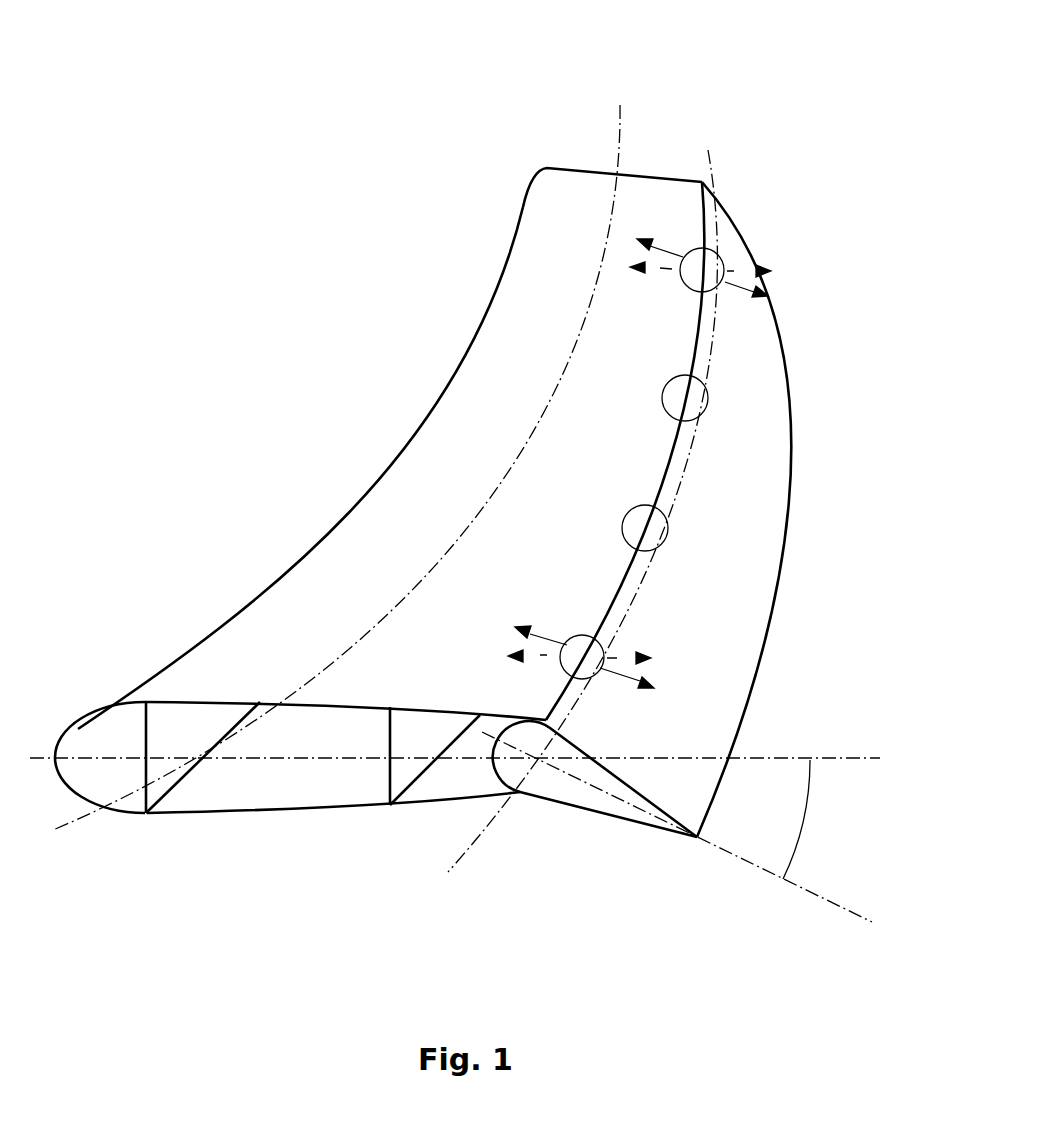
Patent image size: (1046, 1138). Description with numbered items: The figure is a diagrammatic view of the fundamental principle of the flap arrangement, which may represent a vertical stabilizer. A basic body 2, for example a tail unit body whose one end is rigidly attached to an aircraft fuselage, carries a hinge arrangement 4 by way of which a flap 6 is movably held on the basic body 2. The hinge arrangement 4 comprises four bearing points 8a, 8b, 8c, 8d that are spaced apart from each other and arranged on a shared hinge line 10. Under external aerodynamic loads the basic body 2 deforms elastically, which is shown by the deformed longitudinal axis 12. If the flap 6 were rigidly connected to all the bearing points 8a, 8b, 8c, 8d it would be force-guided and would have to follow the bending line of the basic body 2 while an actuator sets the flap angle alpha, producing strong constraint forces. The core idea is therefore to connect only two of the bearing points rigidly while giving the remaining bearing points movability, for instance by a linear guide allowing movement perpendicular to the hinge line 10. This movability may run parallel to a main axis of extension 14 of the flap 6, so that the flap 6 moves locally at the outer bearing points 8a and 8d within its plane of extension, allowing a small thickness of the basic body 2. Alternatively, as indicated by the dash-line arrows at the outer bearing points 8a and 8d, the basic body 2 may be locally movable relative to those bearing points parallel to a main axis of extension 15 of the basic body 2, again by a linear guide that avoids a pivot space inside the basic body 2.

The basic body 2 is at (385, 507).
The hinge arrangement 4 is at (698, 163).
The flap 6 is at (768, 507).
The bearing point 8a is at (601, 677).
The bearing point 8b is at (624, 537).
The bearing point 8c is at (673, 417).
The bearing point 8d is at (687, 289).
The hinge line 10 is at (460, 862).
The deformed longitudinal axis 12 is at (62, 828).
The main axis of extension of the flap 14 is at (840, 908).
The main axis of extension of the basic body 15 is at (55, 756).